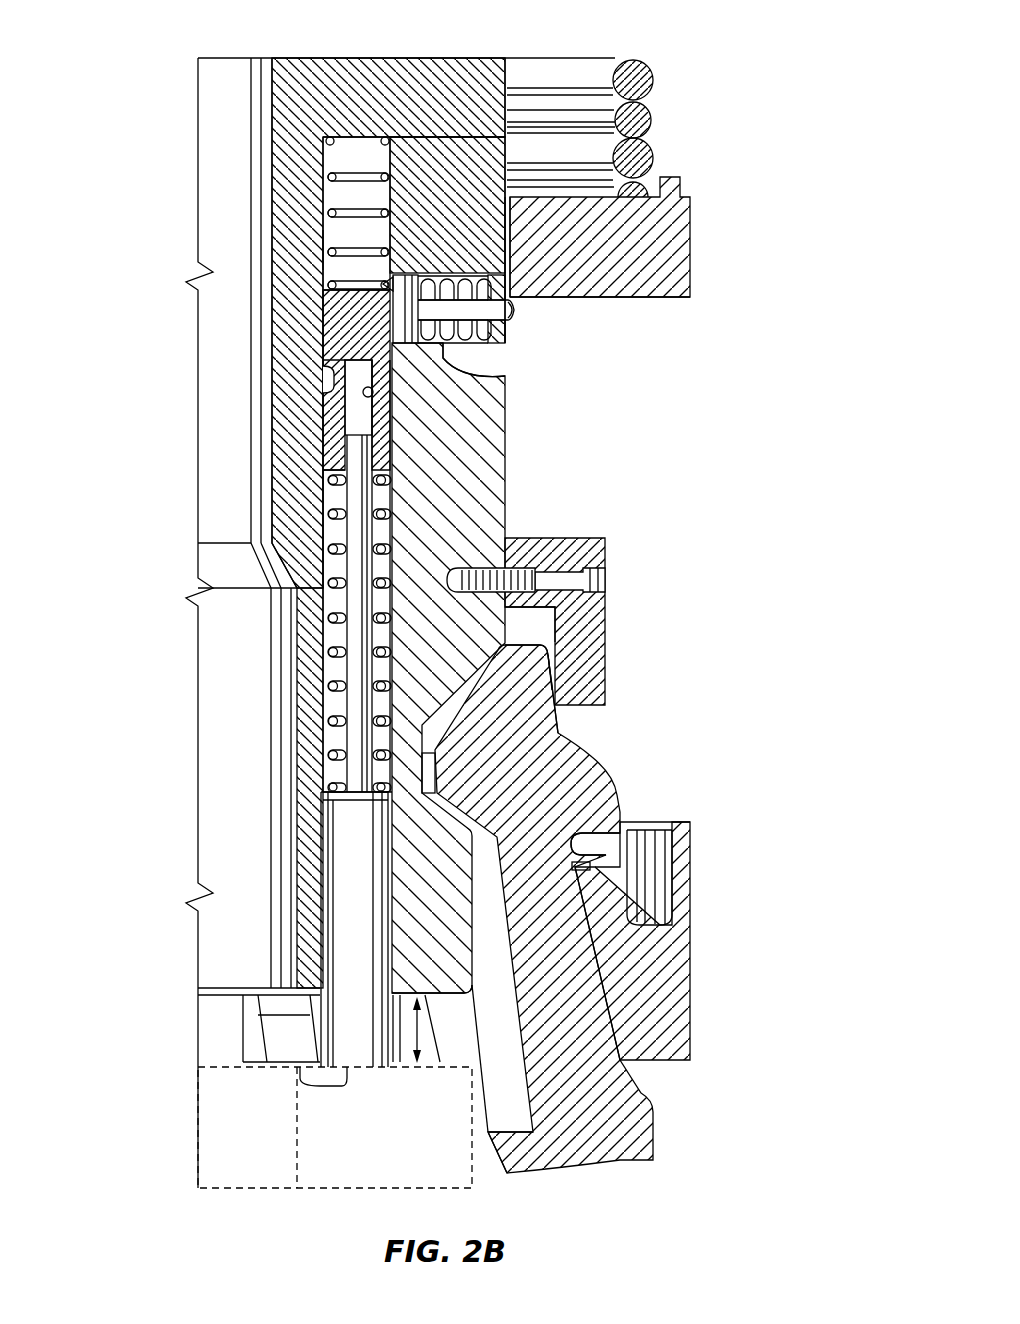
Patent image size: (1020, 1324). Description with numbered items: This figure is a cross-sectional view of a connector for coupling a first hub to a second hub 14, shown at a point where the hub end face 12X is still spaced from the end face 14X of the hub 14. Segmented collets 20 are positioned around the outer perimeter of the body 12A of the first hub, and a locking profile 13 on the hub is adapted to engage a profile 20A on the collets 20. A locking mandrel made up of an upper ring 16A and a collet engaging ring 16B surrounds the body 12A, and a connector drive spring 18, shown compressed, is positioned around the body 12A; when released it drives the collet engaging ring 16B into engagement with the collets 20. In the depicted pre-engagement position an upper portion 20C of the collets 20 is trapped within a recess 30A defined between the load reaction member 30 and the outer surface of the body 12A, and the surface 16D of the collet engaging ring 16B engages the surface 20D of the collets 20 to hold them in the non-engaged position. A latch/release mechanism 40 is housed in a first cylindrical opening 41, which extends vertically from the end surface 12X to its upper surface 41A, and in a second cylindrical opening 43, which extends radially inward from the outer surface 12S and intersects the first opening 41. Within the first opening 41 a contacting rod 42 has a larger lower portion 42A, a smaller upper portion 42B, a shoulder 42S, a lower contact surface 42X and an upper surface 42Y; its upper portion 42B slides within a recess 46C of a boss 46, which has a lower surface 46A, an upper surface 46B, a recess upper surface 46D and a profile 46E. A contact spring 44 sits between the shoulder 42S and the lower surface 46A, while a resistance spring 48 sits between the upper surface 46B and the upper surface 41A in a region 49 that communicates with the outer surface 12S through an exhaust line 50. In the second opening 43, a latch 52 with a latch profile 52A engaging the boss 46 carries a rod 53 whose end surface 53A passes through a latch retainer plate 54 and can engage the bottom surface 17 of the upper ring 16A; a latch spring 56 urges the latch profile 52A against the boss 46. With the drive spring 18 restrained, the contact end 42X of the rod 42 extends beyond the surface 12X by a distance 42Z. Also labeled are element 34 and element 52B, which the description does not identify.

The body 12A is at (345, 60).
The outer surface 12S is at (505, 497).
The end face 12X is at (443, 1002).
The locking profile 13 is at (425, 773).
The second hub 14 is at (297, 1130).
The end face 14X is at (447, 1057).
The upper ring 16A is at (680, 240).
The collet engaging ring 16B is at (652, 958).
The surface 16D is at (620, 882).
The bottom surface 17 is at (690, 298).
The connector drive spring 18 is at (637, 82).
The segmented collets 20 is at (592, 793).
The profile 20A is at (460, 757).
The upper portion 20C is at (527, 672).
The surface 20D is at (600, 853).
The load reaction member 30 is at (585, 655).
The recess 30A is at (548, 623).
The fastener bolt 34 is at (597, 578).
The latch/release mechanism 40 is at (160, 266).
The first cylindrical opening 41 is at (322, 196).
The upper surface 41A is at (328, 152).
The contacting rod 42 is at (323, 850).
The first lower portion 42A is at (330, 922).
The second upper portion 42B is at (325, 700).
The shoulder 42S is at (322, 790).
The lower contact surface 42X is at (312, 1076).
The upper surface 42Y is at (378, 425).
The distance 42Z is at (425, 1030).
The second cylindrical opening 43 is at (478, 372).
The contact spring 44 is at (325, 618).
The boss 46 is at (333, 443).
The lower surface 46A is at (330, 500).
The upper surface 46B is at (358, 278).
The recess 46C is at (373, 396).
The upper surface 46D is at (333, 368).
The profile 46E is at (332, 393).
The resistance spring 48 is at (325, 250).
The region 49 is at (367, 150).
The exhaust line 50 is at (632, 118).
The latch 52 is at (442, 280).
The latch profile 52A is at (397, 282).
The latch pin spring 52B is at (428, 279).
The rod 53 is at (505, 333).
The end surface 53A is at (516, 310).
The latch retainer plate 54 is at (510, 290).
The latch spring 56 is at (507, 278).